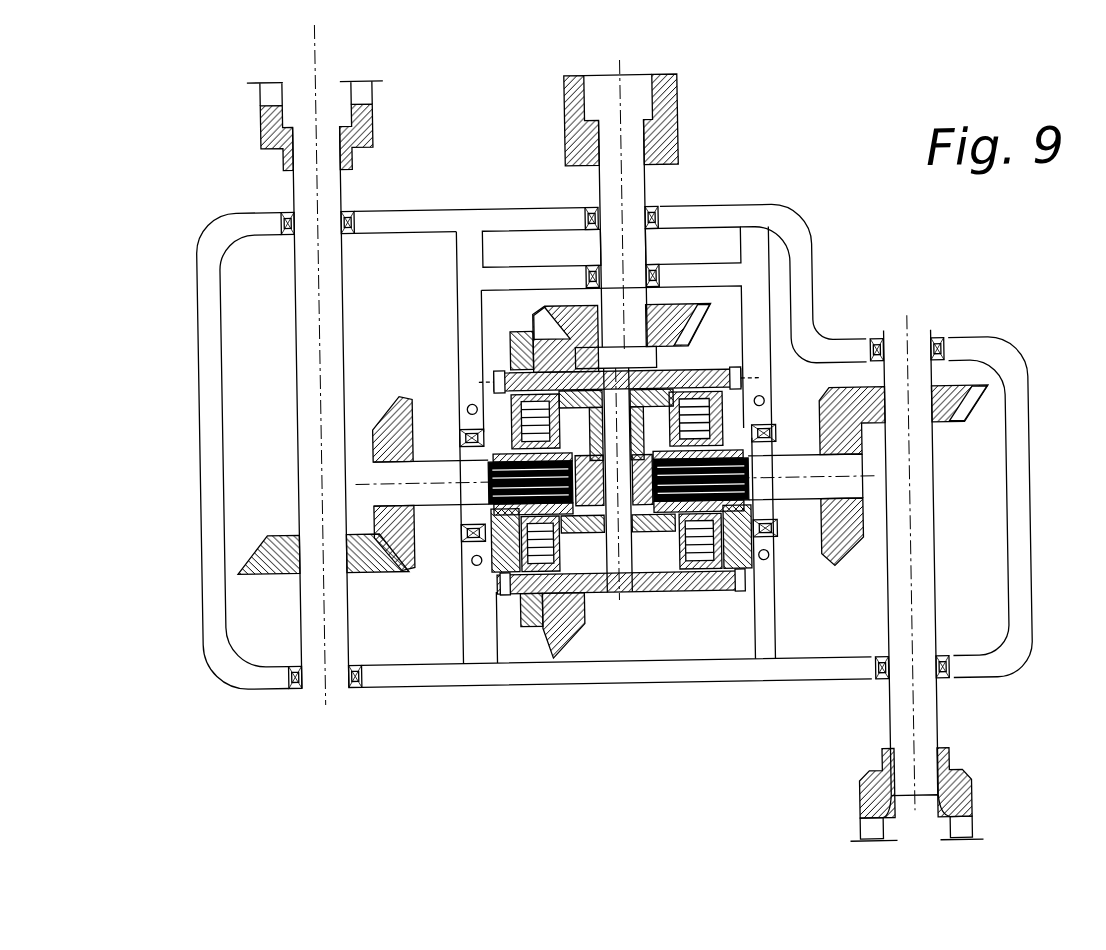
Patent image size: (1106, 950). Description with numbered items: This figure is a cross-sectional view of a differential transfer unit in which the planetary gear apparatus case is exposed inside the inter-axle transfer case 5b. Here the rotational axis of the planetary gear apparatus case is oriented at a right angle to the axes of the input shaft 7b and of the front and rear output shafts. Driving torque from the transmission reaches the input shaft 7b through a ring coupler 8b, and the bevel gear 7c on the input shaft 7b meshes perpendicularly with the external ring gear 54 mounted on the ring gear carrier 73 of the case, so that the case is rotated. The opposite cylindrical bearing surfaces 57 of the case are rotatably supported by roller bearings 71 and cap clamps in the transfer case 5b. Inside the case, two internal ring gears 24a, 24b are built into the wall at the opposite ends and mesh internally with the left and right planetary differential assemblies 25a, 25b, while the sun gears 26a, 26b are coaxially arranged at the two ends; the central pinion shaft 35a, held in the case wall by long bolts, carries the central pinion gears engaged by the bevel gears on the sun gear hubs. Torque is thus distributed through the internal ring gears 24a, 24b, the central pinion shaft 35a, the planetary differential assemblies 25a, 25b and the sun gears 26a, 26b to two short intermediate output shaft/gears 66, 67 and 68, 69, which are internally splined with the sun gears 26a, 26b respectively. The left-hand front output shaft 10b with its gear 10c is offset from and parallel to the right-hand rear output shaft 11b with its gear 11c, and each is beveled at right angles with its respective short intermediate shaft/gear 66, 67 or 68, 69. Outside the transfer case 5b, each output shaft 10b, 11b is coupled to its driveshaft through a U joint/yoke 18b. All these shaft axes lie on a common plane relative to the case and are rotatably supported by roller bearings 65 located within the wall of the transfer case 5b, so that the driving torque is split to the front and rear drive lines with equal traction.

The transfer case 5b is at (1029, 560).
The input shaft 7b is at (632, 188).
The bevel gear 7c is at (685, 306).
The ring coupler 8b is at (664, 94).
The left-hand front output shaft 10b is at (313, 183).
The front output gear 10c is at (278, 554).
The right-hand rear output shaft 11b is at (917, 525).
The rear output gear 11c is at (946, 412).
The U joint/yoke 18b is at (358, 119).
The left-hand internal ring gear 24a is at (521, 363).
The right-hand internal ring gear 24b is at (724, 354).
The left-hand planetary differential assembly 25a is at (496, 388).
The right-hand planetary differential assembly 25b is at (743, 388).
The left-hand sun gear 26a is at (540, 559).
The right-hand sun gear 26b is at (693, 566).
The central pinion shaft 35a is at (615, 595).
The external ring gear 54 is at (559, 619).
The cylindrical bearing surfaces 57 is at (475, 510).
The roller bearings 65 is at (358, 212).
The left short intermediate output shaft 66 is at (437, 467).
The left short intermediate gear 67 is at (400, 414).
The right short intermediate output shaft 68 is at (795, 473).
The right short intermediate gear 69 is at (837, 526).
The roller bearings 71 is at (458, 542).
The ring gear carrier 73 is at (519, 343).